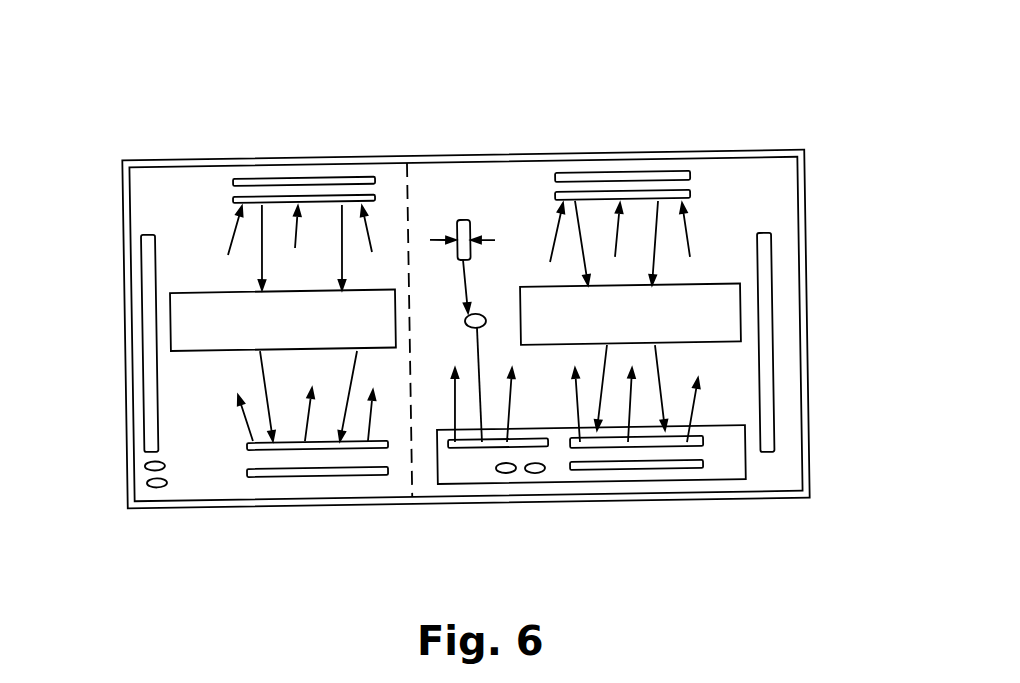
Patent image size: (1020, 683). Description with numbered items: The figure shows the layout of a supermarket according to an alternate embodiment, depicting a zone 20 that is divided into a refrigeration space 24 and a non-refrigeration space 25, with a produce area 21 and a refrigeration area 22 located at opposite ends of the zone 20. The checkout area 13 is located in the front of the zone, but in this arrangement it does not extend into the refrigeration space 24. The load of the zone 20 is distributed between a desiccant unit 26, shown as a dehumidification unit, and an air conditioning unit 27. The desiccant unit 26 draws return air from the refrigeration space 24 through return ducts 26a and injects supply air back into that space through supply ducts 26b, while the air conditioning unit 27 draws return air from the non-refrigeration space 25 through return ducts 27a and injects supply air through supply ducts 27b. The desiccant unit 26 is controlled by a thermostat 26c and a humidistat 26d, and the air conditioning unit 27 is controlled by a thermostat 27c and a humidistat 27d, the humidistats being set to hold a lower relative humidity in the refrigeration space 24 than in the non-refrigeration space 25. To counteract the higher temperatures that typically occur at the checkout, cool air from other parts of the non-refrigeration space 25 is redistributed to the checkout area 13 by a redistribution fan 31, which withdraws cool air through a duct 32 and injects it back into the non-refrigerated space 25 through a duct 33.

The checkout area 13 is at (561, 484).
The zone 20 is at (126, 387).
The produce area 21 is at (773, 289).
The refrigeration area 22 is at (130, 325).
The refrigeration space 24 is at (129, 297).
The non-refrigeration space 25 is at (798, 245).
The desiccant unit 26 is at (205, 344).
The return ducts 26a is at (237, 196).
The supply ducts 26b is at (245, 444).
The thermostat 26c is at (143, 461).
The humidistat 26d is at (146, 481).
The air conditioning unit 27 is at (742, 341).
The return ducts 27a is at (692, 198).
The supply ducts 27b is at (701, 447).
The thermostat 27c is at (491, 474).
The humidistat 27d is at (526, 475).
The redistribution fan 31 is at (477, 313).
The duct 32 is at (465, 220).
The duct 33 is at (448, 445).